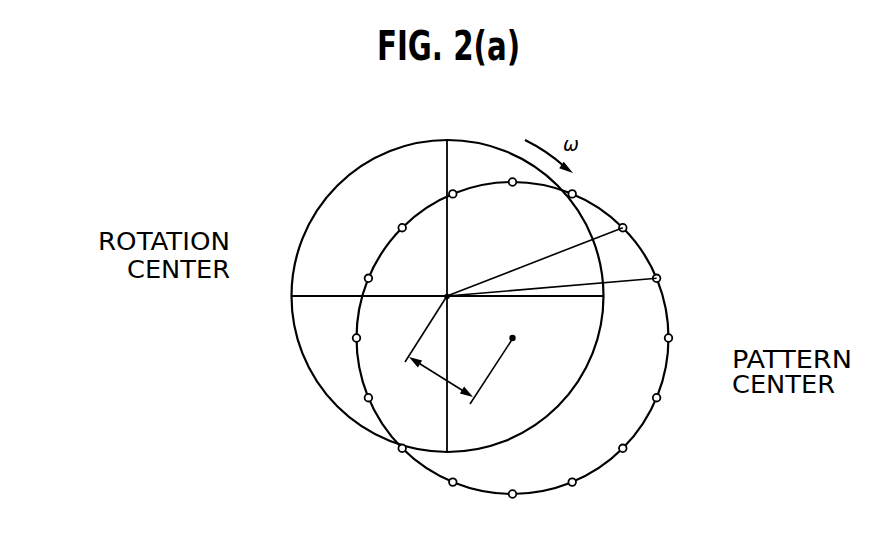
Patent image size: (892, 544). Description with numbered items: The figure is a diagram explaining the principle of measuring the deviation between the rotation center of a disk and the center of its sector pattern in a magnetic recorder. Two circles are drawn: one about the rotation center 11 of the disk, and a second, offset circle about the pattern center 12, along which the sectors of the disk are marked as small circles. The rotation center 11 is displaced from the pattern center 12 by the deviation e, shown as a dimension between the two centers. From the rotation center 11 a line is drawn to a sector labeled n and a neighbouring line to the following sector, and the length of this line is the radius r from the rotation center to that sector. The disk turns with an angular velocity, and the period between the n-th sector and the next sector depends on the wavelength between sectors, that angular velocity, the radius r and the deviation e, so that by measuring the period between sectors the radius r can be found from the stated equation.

The rotation center 11 is at (447, 296).
The pattern center 12 is at (513, 338).
The n-th sector n is at (634, 219).
The radius from the rotation center r is at (535, 261).
The deviation e is at (459, 350).